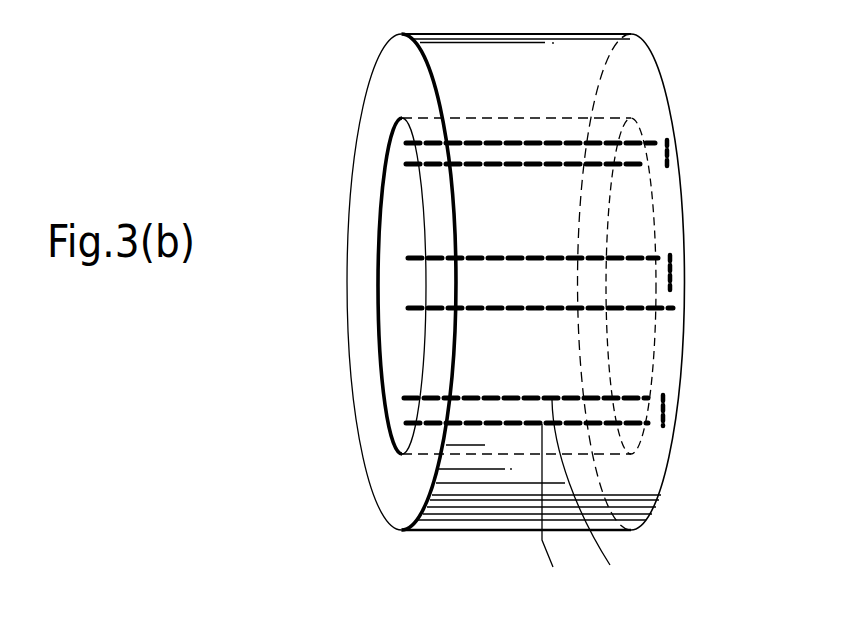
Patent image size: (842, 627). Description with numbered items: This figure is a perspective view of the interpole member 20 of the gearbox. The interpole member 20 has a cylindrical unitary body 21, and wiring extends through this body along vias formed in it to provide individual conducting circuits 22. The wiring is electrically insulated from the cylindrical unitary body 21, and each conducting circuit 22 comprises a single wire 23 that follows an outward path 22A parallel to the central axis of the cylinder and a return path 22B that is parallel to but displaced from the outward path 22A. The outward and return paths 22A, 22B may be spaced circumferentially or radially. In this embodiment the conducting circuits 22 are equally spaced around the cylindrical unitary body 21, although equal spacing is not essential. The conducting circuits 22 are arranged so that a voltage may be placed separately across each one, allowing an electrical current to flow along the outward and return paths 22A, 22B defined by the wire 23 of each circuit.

The interpole member 20 is at (502, 316).
The cylindrical unitary body 21 is at (653, 83).
The conducting circuit 22 is at (497, 435).
The outward path 22A is at (602, 491).
The return path 22B is at (554, 511).
The wire 23 is at (408, 166).